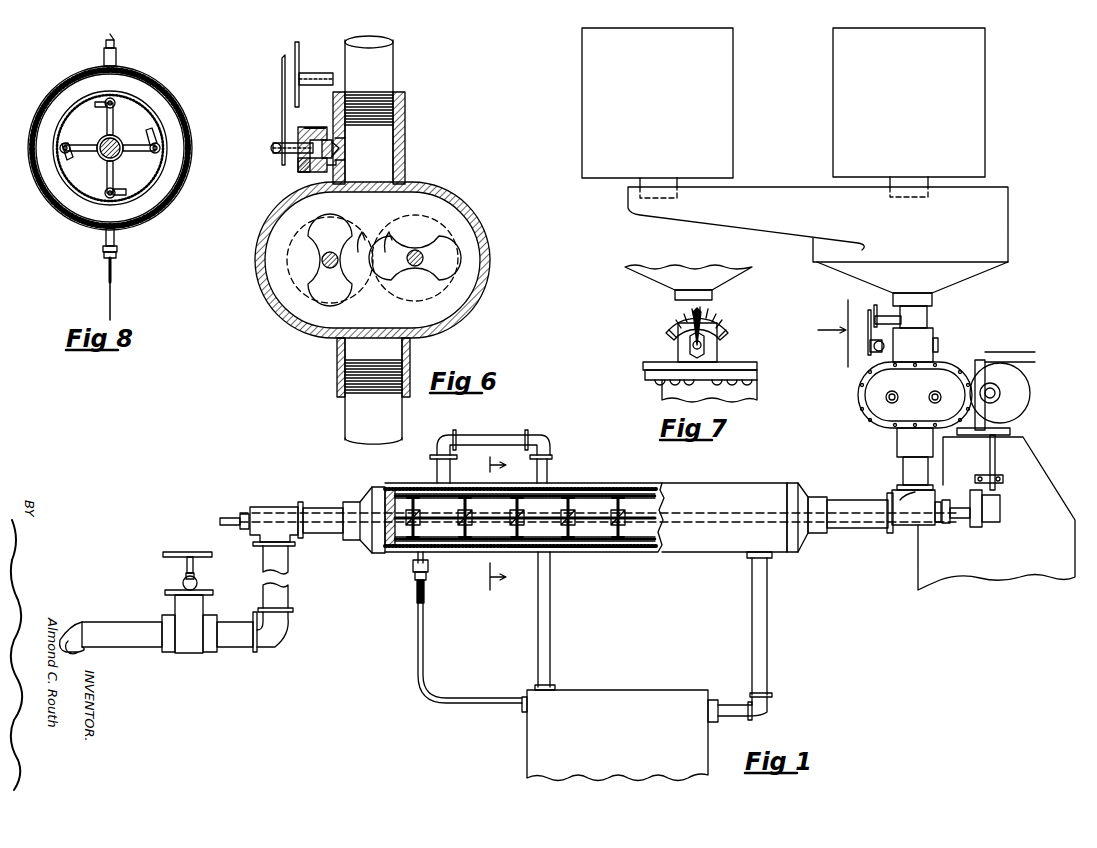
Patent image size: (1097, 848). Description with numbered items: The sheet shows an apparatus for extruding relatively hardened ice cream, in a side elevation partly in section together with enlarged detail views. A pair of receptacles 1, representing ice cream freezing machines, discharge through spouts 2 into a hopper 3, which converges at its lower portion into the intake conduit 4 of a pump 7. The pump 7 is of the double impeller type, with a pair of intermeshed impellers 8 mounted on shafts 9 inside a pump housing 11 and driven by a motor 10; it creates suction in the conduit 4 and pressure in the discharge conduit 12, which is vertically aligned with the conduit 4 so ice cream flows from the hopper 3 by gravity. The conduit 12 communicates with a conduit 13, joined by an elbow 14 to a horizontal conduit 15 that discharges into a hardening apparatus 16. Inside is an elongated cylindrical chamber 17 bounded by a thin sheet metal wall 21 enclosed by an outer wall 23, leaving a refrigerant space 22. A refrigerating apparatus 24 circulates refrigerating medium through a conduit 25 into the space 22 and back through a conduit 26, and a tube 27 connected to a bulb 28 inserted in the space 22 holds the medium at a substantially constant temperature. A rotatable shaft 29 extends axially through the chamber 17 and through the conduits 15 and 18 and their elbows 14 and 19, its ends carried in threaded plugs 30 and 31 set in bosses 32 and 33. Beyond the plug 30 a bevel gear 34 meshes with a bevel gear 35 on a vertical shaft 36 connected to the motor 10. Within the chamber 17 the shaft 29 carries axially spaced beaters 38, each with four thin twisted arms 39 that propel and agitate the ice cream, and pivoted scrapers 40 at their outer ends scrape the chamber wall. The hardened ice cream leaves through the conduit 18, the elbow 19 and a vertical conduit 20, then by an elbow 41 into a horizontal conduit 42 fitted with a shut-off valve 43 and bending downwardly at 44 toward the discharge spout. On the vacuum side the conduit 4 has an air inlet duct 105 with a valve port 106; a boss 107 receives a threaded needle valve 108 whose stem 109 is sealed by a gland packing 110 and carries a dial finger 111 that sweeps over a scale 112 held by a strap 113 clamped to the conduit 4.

In FIG. 1, the receptacle 1 is at (722, 122).
In FIG. 1, the spout 2 is at (638, 186).
In FIG. 1, the hopper 3 is at (870, 220).
In FIG. 6, the intake conduit 4 is at (404, 138).
In FIG. 1, the intake conduit 4 is at (925, 336).
In FIG. 6, the pump 7 is at (432, 190).
In FIG. 1, the pump 7 is at (948, 353).
In FIG. 6, the impeller 8 is at (350, 216).
In FIG. 1, the impeller 8 is at (502, 523).
In FIG. 6, the shaft 9 is at (326, 266).
In FIG. 1, the motor 10 is at (1018, 390).
In FIG. 6, the pump housing 11 is at (440, 203).
In FIG. 6, the discharge conduit 12 is at (392, 347).
In FIG. 1, the discharge conduit 12 is at (903, 445).
In FIG. 1, the conduit 13 is at (903, 472).
In FIG. 1, the elbow 14 is at (900, 528).
In FIG. 1, the horizontal conduit 15 is at (858, 530).
In FIG. 1, the hardening apparatus 16 is at (756, 480).
In FIG. 1, the cylindrical chamber 17 is at (638, 490).
In FIG. 1, the conduit 18 is at (326, 510).
In FIG. 1, the elbow 19 is at (275, 540).
In FIG. 1, the vertical conduit 20 is at (285, 560).
In FIG. 1, the sheet metal wall 21 is at (592, 494).
In FIG. 1, the refrigerant space 22 is at (565, 483).
In FIG. 1, the outer wall 23 is at (582, 485).
In FIG. 1, the refrigerating apparatus 24 is at (590, 700).
In FIG. 1, the conduit 25 is at (446, 468).
In FIG. 1, the conduit 26 is at (767, 608).
In FIG. 8, the tube 27 is at (112, 296).
In FIG. 1, the tube 27 is at (421, 655).
In FIG. 8, the bulb 28 is at (118, 217).
In FIG. 1, the bulb 28 is at (425, 563).
In FIG. 1, the rotatable shaft 29 is at (580, 515).
In FIG. 1, the threaded plug 30 is at (947, 526).
In FIG. 1, the threaded plug 31 is at (243, 514).
In FIG. 1, the boss 32 is at (938, 525).
In FIG. 1, the boss 33 is at (257, 512).
In FIG. 1, the bevel gear 34 is at (982, 520).
In FIG. 1, the bevel gear 35 is at (1003, 483).
In FIG. 1, the vertical shaft 36 is at (996, 456).
In FIG. 8, the beater 38 is at (110, 133).
In FIG. 1, the beater 38 is at (622, 526).
In FIG. 8, the arm 39 is at (110, 178).
In FIG. 1, the arm 39 is at (519, 508).
In FIG. 8, the scraper 40 is at (95, 120).
In FIG. 1, the elbow 41 is at (266, 650).
In FIG. 1, the horizontal conduit 42 is at (150, 640).
In FIG. 1, the shut-off valve 43 is at (180, 607).
In FIG. 1, the downward bend 44 is at (85, 630).
In FIG. 6, the air inlet duct 105 is at (328, 135).
In FIG. 6, the valve port 106 is at (344, 160).
In FIG. 6, the boss 107 is at (328, 168).
In FIG. 6, the valve 108 is at (300, 170).
In FIG. 6, the valve stem 109 is at (298, 135).
In FIG. 6, the gland packing 110 is at (298, 160).
In FIG. 6, the dial finger 111 is at (282, 108).
In FIG. 7, the dial finger 111 is at (712, 336).
In FIG. 1, the dial finger 111 is at (868, 318).
In FIG. 6, the scale 112 is at (294, 46).
In FIG. 7, the scale 112 is at (723, 314).
In FIG. 6, the strap 113 is at (319, 73).
In FIG. 1, the strap 113 is at (915, 322).